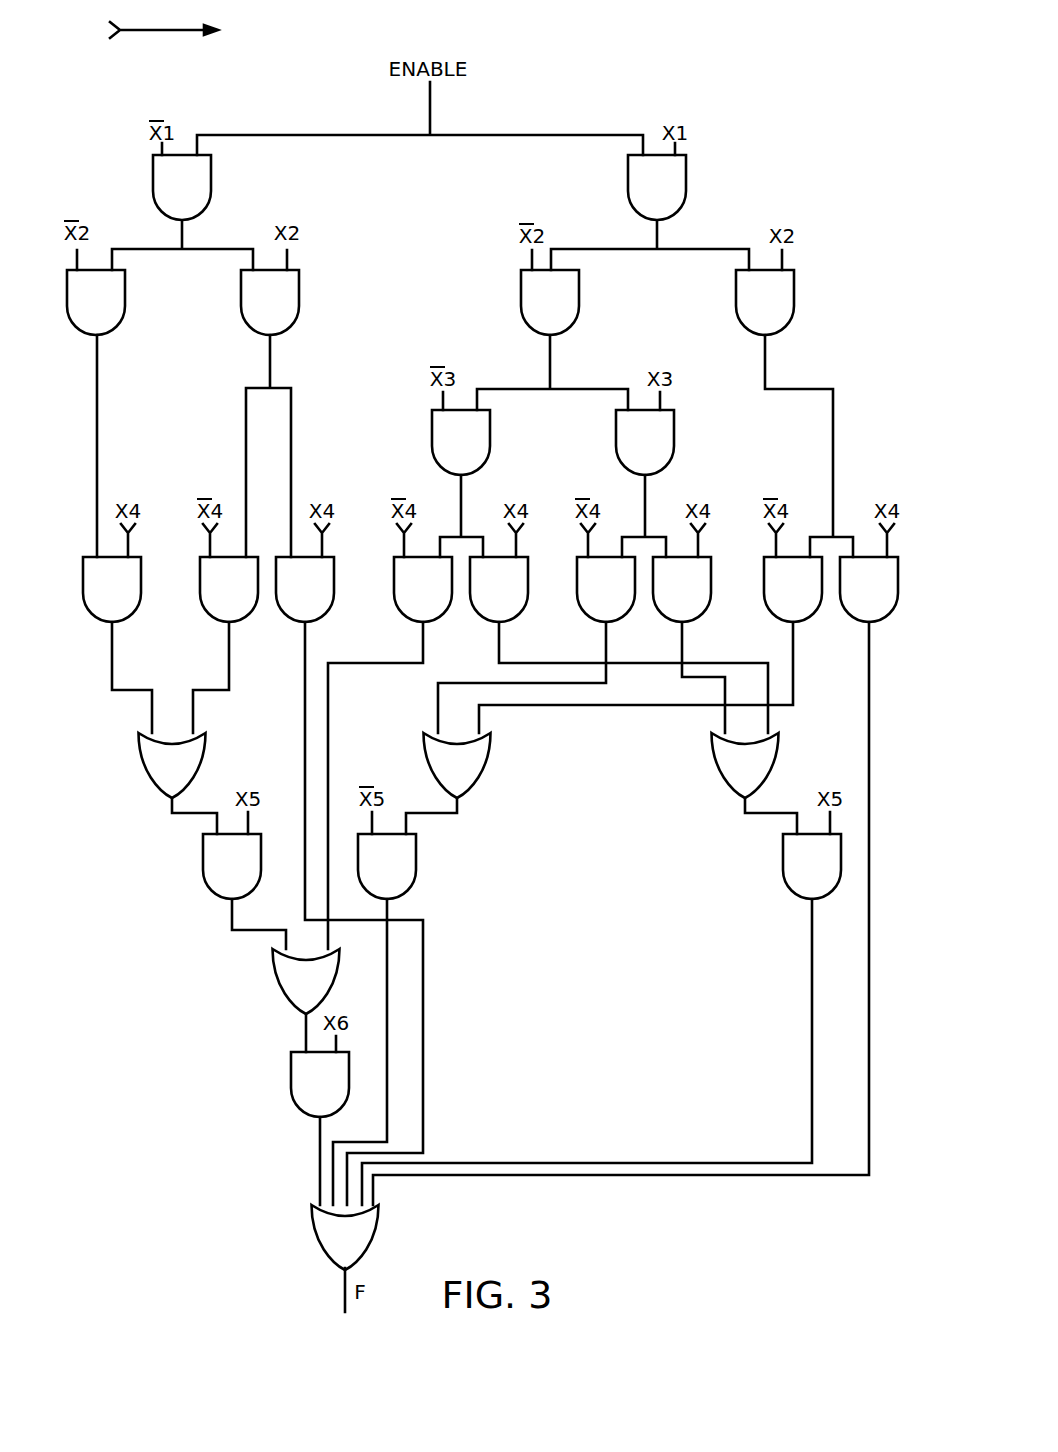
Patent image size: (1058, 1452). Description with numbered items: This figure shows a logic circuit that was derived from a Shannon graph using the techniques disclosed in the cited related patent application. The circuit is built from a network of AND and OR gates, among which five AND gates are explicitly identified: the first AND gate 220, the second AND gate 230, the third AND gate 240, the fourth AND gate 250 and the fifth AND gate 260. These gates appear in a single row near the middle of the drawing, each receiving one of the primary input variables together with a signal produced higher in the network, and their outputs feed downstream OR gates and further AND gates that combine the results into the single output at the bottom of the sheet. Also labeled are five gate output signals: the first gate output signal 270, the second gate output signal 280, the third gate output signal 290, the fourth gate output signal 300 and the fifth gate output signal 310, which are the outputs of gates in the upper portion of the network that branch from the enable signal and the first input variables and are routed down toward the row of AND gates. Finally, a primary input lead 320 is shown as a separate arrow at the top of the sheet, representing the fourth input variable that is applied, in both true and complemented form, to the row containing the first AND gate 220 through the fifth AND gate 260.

The AND gate A1 220 is at (92, 612).
The AND gate A2 230 is at (287, 615).
The AND gate A3 240 is at (479, 615).
The AND gate A4 250 is at (661, 615).
The AND gate A5 260 is at (847, 615).
The gate output signal g1 270 is at (125, 300).
The gate output signal g2 280 is at (299, 300).
The gate output signal g3 290 is at (432, 447).
The gate output signal g4 300 is at (616, 447).
The gate output signal g5 310 is at (736, 300).
The primary input lead x4 320 is at (176, 30).